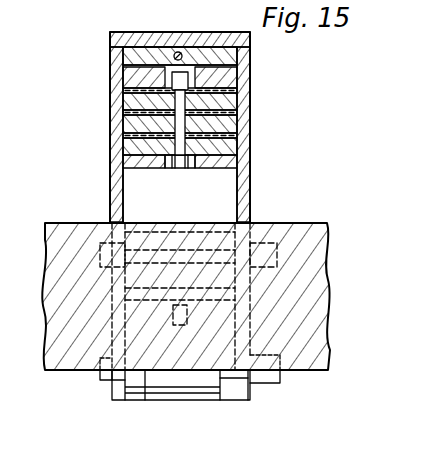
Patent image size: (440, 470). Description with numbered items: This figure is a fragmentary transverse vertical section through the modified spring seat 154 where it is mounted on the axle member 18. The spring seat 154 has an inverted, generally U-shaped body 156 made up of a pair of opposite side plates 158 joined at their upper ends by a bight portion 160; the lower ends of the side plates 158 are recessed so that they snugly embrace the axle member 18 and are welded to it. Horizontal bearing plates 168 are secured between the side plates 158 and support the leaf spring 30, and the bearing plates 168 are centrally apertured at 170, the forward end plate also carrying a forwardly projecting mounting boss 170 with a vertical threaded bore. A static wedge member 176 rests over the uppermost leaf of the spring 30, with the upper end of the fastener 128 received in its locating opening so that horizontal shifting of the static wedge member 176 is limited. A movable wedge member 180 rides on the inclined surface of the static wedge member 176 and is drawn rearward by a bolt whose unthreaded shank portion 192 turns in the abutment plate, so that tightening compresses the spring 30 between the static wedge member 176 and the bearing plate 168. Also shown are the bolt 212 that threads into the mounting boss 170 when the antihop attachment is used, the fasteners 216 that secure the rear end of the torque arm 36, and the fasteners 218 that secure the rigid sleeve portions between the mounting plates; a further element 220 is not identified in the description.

The axle member 18 is at (62, 343).
The spring 30 is at (251, 97).
The torque arm 36 is at (187, 388).
The fastener 128 is at (177, 172).
The spring seat 154 is at (253, 158).
The U-shaped body 156 is at (248, 183).
The side plates 158 is at (110, 113).
The bight portion 160 is at (110, 36).
The bearing plate 168 is at (111, 182).
The mounting boss 170 is at (207, 169).
The static wedge member 176 is at (252, 74).
The movable wedge member 180 is at (110, 62).
The unthreaded shank portion 192 is at (200, 27).
The bolt 212 is at (238, 346).
The fasteners 216 is at (102, 378).
The fasteners 218 is at (278, 218).
The plate end 220 is at (114, 393).